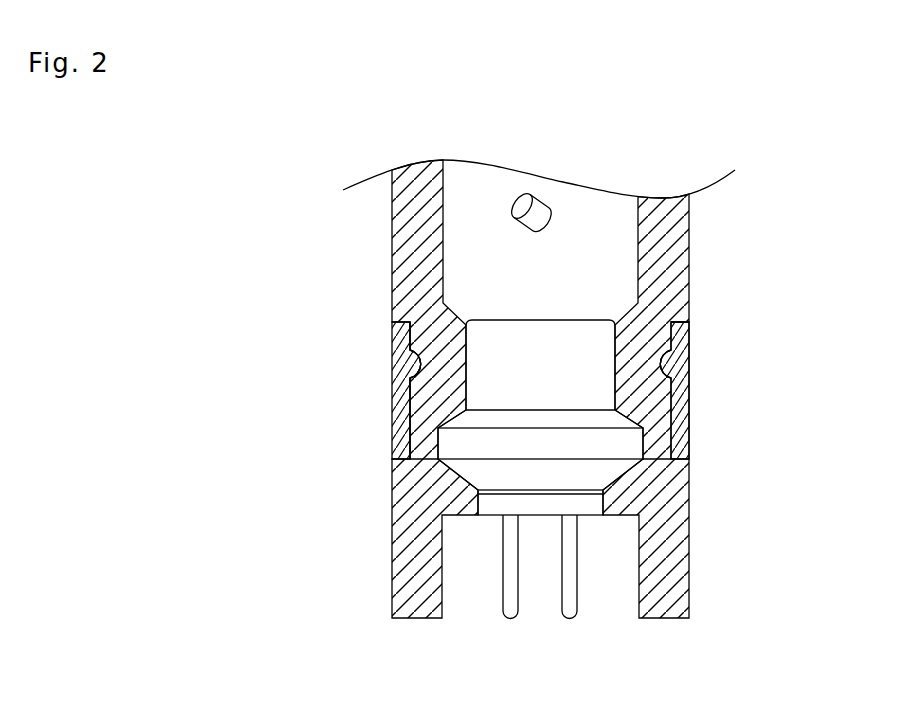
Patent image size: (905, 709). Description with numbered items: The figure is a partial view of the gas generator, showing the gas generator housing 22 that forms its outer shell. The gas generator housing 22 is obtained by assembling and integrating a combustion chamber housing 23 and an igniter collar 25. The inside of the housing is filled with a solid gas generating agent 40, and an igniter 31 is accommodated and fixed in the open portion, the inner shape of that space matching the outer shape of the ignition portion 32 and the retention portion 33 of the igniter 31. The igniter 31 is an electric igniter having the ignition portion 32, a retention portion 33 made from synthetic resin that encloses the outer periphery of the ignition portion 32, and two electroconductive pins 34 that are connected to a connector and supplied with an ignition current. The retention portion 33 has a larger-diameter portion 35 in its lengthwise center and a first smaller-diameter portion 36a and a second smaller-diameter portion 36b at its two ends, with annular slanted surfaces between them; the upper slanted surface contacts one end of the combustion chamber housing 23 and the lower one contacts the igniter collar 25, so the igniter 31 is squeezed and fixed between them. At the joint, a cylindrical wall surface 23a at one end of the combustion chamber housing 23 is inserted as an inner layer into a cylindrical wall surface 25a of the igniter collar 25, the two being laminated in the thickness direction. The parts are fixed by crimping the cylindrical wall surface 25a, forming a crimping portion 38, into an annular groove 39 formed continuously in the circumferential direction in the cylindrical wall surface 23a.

The gas generator housing 22 is at (446, 389).
The combustion chamber housing 23 is at (400, 212).
The igniter collar 25 is at (397, 343).
The cylindrical wall surface 23a is at (425, 388).
The cylindrical wall surface 25a is at (388, 403).
The igniter 31 is at (578, 508).
The ignition portion 32 is at (603, 391).
The retention portion 33 is at (631, 448).
The electroconductive pins 34 is at (567, 619).
The larger-diameter portion 35 is at (440, 444).
The first smaller-diameter portion 36a is at (487, 503).
The second smaller-diameter portion 36b is at (464, 411).
The crimping portion 38 is at (680, 367).
The annular groove 39 is at (687, 360).
The solid gas generating agent 40 is at (538, 211).